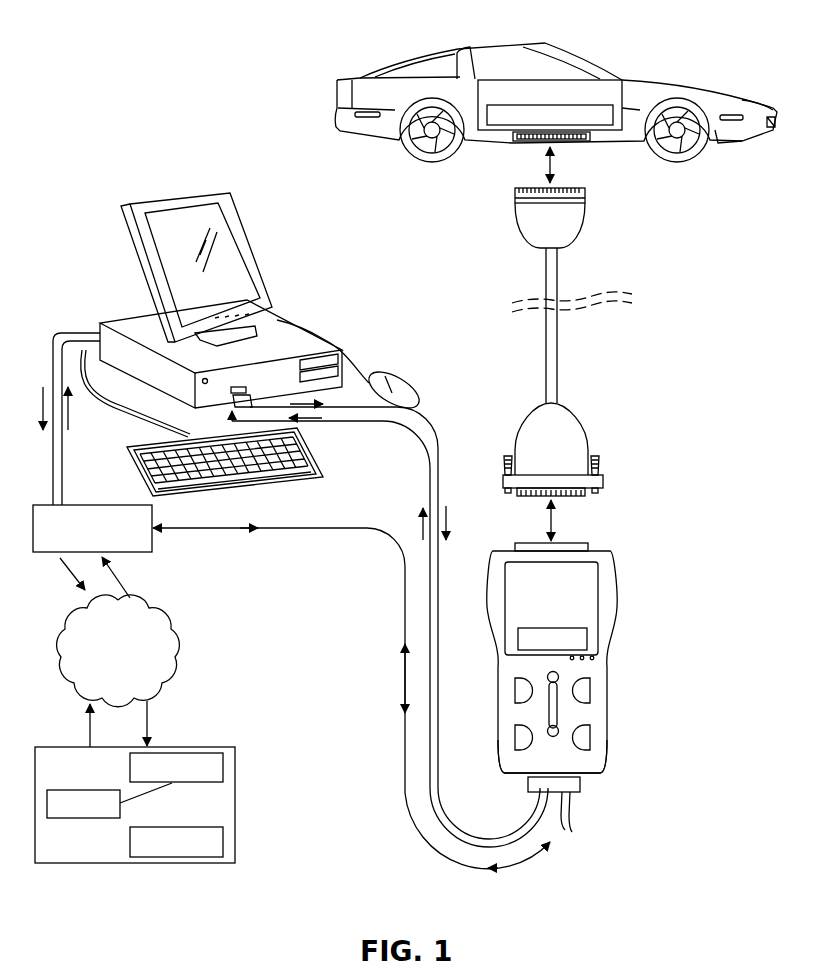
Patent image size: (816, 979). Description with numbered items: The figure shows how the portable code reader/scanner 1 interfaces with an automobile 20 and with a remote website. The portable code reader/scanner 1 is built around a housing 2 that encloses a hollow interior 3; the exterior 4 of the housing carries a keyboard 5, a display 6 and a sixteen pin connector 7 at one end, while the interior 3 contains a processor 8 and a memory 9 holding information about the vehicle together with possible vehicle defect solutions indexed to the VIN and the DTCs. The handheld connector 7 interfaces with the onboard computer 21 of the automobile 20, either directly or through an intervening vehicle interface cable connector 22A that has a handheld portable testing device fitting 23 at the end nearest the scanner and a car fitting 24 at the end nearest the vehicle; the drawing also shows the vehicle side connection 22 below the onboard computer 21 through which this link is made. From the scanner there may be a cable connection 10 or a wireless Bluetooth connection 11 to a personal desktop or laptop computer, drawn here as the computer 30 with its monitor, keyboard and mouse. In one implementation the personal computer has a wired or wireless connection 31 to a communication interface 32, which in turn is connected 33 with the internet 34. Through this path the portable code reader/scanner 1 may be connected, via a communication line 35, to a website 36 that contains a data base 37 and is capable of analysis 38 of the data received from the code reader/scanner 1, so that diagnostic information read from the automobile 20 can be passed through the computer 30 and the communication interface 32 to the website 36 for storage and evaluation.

The portable code reader/scanner 1 is at (588, 655).
The housing 2 is at (607, 688).
The hollow interior 3 is at (607, 653).
The exterior 4 is at (609, 750).
The keyboard 5 is at (589, 733).
The display 6 is at (585, 585).
The sixteen pin connector 7 is at (565, 543).
The processor 8 is at (594, 667).
The memory 9 is at (586, 628).
The cable connection 10 is at (438, 792).
The wireless Bluetooth connection 11 is at (573, 813).
The automobile 20 is at (357, 78).
The onboard computer 21 is at (620, 79).
The diagnostic connector 22 is at (584, 143).
The vehicle interface cable connector 22A is at (553, 343).
The handheld portable testing device fitting 23 is at (603, 482).
The car fitting 24 is at (576, 224).
The computer 30 is at (278, 327).
The wired or wireless connection 31 is at (57, 458).
The communication interface 32 is at (153, 540).
The connection to the internet 33 is at (100, 581).
The internet 34 is at (176, 630).
The communication line 35 is at (133, 722).
The website 36 is at (224, 763).
The data base 37 is at (85, 819).
The analysis 38 is at (223, 840).